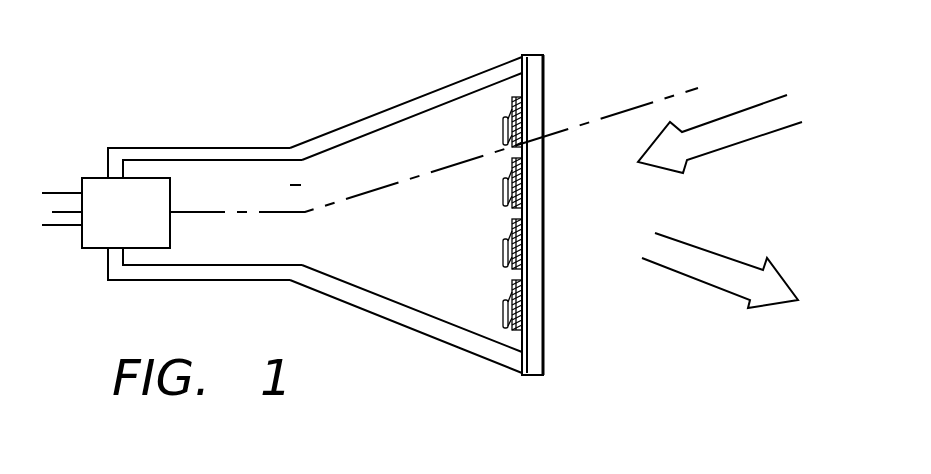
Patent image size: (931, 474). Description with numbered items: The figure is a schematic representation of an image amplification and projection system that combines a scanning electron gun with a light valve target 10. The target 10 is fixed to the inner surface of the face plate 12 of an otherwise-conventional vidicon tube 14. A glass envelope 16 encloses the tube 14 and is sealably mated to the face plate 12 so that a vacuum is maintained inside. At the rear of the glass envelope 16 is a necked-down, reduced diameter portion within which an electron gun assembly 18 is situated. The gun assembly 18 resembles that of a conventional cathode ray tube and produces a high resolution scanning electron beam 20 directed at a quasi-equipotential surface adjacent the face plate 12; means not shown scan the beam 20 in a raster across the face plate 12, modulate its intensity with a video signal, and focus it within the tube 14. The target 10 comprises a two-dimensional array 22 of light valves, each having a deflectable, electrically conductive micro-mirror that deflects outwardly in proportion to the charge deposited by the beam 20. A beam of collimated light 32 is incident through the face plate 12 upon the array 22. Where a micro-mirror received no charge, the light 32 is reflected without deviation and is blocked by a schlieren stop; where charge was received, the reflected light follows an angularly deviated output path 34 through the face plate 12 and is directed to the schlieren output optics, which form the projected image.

The light valve target 10 is at (522, 377).
The face plate 12 is at (530, 315).
The vidicon tube 14 is at (363, 120).
The glass envelope 16 is at (222, 155).
The electron gun assembly 18 is at (115, 202).
The scanning electron beam 20 is at (360, 200).
The two-dimensional array of light valves 22 is at (490, 108).
The beam of collimated light 32 is at (755, 120).
The output path of the reflected beam 34 is at (742, 278).